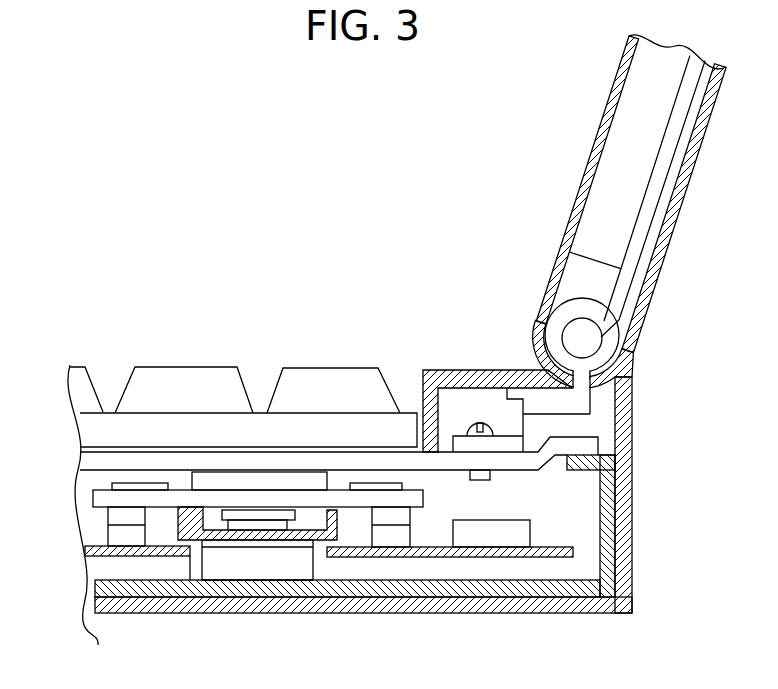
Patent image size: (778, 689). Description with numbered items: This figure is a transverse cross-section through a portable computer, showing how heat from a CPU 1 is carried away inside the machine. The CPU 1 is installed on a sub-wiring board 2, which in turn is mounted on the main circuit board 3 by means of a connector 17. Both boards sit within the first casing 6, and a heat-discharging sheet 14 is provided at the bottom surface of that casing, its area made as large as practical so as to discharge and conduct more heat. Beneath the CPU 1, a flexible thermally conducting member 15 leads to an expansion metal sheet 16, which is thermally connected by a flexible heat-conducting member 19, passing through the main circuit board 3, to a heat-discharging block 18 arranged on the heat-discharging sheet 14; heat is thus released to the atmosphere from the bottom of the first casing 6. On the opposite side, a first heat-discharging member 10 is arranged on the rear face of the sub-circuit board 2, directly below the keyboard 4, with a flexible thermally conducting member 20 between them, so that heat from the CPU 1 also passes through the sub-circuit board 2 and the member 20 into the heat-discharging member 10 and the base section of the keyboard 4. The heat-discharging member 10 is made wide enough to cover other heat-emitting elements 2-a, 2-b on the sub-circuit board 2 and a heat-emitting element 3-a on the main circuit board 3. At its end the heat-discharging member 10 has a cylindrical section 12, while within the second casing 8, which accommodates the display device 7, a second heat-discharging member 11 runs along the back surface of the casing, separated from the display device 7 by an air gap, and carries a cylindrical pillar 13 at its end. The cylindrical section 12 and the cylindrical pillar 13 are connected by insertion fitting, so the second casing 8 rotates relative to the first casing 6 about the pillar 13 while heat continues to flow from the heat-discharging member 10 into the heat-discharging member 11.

The CPU 1 is at (244, 515).
The sub-wiring board 2 is at (95, 495).
The heat-emitting element 2-a is at (140, 487).
The heat-emitting element 2-b is at (376, 486).
The main circuit board 3 is at (548, 552).
The heat-emitting element 3-a is at (490, 527).
The keyboard 4 is at (184, 367).
The first casing 6 is at (625, 580).
The display device 7 is at (622, 131).
The second casing 8 is at (668, 250).
The first heat-discharging member 10 is at (86, 458).
The second heat-discharging member 11 is at (677, 167).
The cylindrical section 12 is at (560, 316).
The cylindrical pillar 13 is at (573, 338).
The heat-discharging sheet 14 is at (604, 543).
The flexible thermally conducting member 15 is at (262, 527).
The expansion metal sheet 16 is at (203, 535).
The connector 17 is at (112, 537).
The heat-discharging block 18 is at (298, 563).
The flexible heat-conducting member 19 is at (285, 547).
The flexible thermally conducting member 20 is at (302, 480).